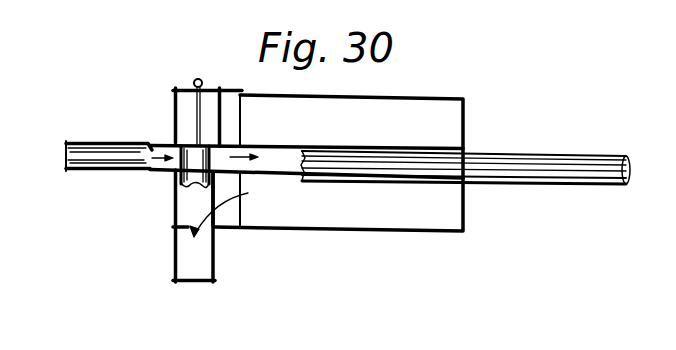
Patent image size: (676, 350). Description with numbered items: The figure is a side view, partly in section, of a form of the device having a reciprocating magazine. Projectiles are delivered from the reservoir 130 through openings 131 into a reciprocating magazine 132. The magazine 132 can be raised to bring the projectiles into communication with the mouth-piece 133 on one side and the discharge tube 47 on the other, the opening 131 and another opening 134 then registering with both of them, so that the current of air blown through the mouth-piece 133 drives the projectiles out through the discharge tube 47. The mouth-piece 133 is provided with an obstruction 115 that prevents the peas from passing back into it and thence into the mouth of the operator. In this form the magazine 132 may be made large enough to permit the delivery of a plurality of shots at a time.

The barrel 47 is at (522, 185).
The obstruction 115 is at (173, 238).
The reservoir 130 is at (387, 218).
The openings 131 is at (218, 220).
The reciprocating magazine 132 is at (192, 270).
The mouth-piece 133 is at (90, 168).
The opening 134 is at (180, 202).